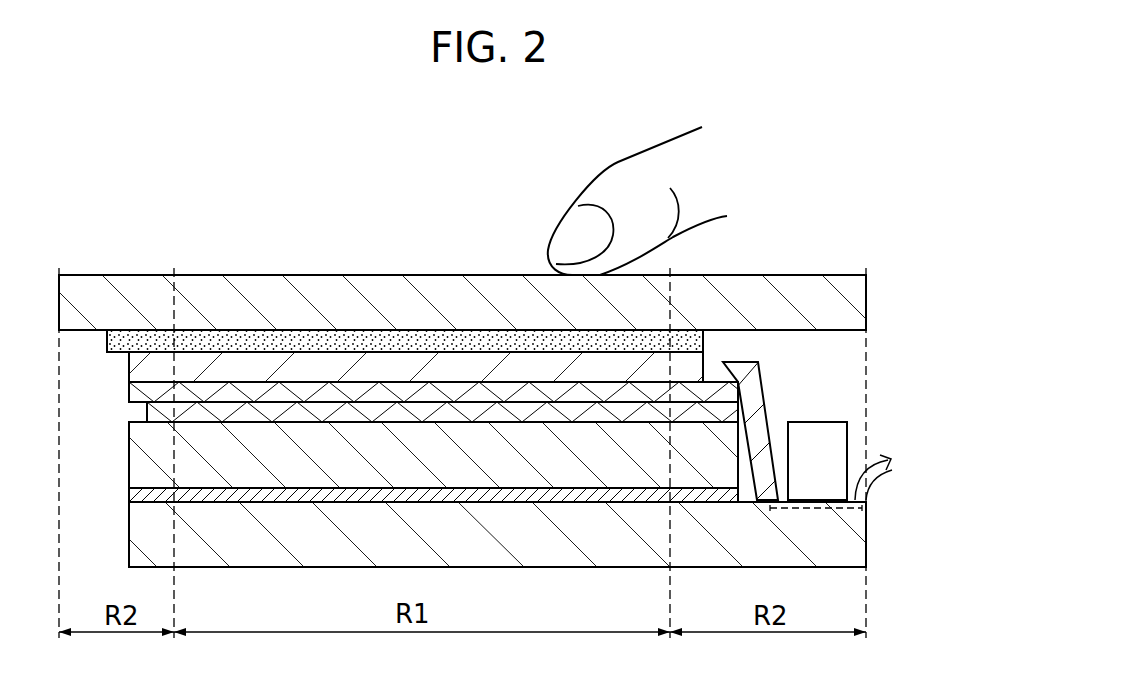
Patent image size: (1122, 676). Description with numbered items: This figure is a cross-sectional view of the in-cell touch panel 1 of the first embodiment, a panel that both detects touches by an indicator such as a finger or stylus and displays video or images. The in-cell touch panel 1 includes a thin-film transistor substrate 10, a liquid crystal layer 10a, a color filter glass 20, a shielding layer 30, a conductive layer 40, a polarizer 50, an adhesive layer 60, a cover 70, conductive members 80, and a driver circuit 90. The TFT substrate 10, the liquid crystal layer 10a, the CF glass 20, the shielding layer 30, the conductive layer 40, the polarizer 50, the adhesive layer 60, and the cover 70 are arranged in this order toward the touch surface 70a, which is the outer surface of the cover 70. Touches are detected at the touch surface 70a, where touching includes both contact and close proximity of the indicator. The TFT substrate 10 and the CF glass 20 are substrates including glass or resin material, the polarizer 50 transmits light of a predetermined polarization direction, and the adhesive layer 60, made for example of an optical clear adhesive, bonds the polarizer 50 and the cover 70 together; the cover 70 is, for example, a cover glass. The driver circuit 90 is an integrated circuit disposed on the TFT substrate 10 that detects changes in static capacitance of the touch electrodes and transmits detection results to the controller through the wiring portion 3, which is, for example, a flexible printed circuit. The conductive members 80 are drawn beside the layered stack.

The in-cell touch panel 1 is at (106, 133).
The wiring portion 3 is at (883, 460).
The thin-film transistor substrate 10 is at (608, 522).
The liquid crystal layer 10a is at (500, 503).
The color filter glass 20 is at (443, 448).
The shielding layer 30 is at (283, 410).
The conductive layer 40 is at (433, 392).
The polarizer 50 is at (357, 368).
The adhesive layer 60 is at (185, 343).
The cover 70 is at (278, 287).
The touch surface 70a is at (514, 275).
The conductive members 80 is at (774, 432).
The driver circuit 90 is at (820, 421).